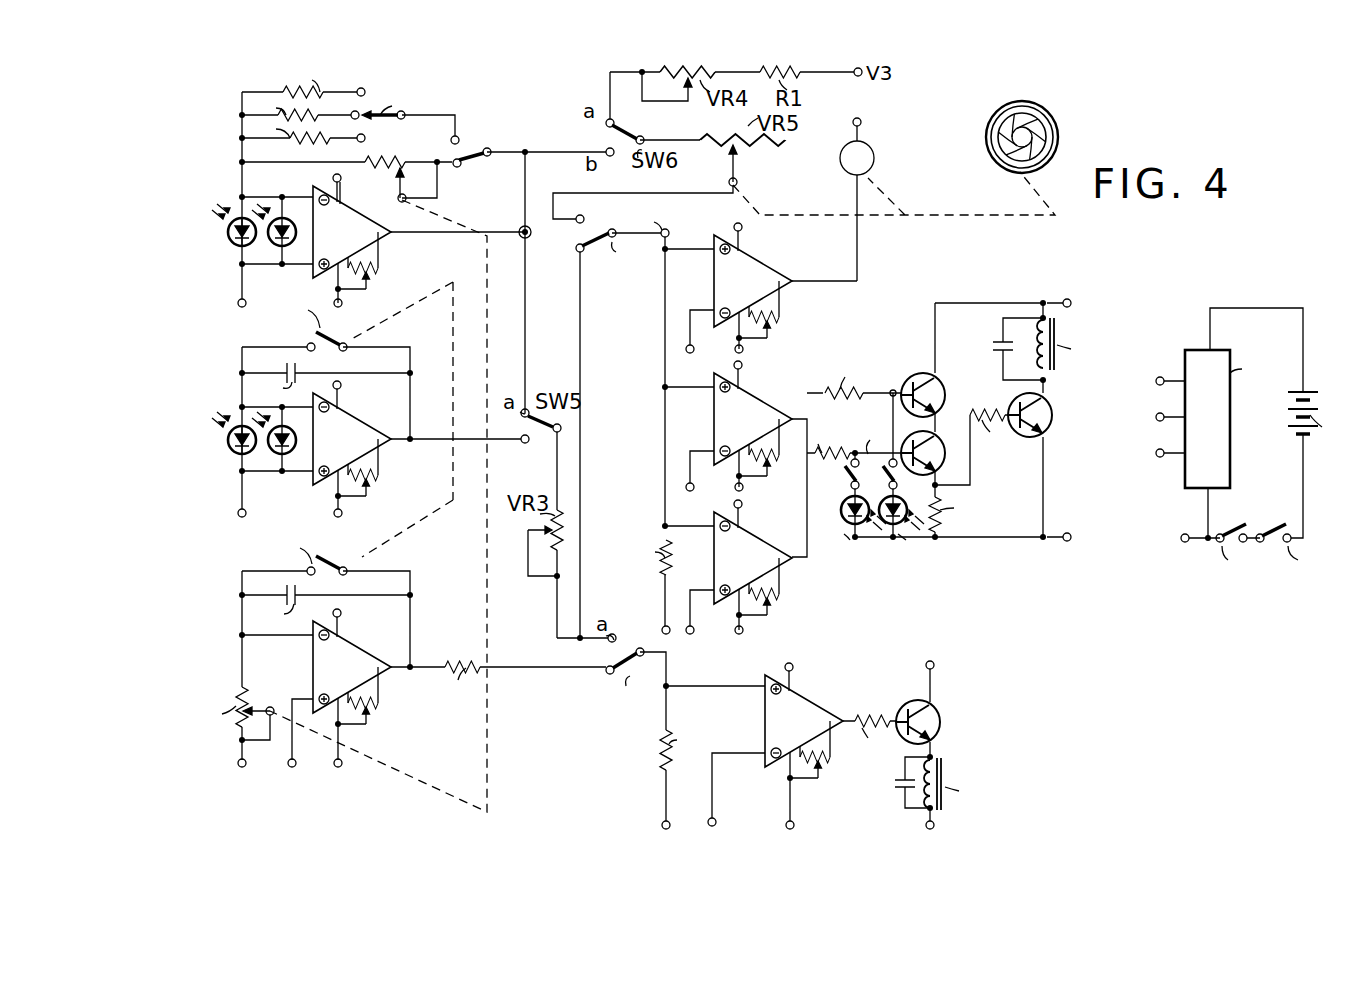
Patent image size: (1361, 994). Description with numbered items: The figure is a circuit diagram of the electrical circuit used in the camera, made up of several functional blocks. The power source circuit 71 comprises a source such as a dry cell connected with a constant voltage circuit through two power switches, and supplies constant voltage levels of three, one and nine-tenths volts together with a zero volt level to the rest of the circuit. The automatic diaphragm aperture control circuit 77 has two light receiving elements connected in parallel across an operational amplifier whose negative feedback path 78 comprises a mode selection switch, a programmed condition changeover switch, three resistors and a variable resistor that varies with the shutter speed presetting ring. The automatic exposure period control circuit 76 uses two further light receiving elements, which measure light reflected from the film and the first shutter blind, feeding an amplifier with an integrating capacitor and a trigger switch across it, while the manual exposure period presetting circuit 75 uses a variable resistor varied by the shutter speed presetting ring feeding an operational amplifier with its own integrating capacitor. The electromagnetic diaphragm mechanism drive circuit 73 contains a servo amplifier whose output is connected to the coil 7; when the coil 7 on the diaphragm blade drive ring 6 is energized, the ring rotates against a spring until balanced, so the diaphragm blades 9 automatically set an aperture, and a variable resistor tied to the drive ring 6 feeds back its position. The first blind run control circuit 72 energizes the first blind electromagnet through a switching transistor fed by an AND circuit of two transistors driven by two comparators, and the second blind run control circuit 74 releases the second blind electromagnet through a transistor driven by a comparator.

The automatic diaphragm aperture control circuit 77 is at (220, 170).
The automatic exposure period control circuit 76 is at (220, 383).
The manual exposure period presetting circuit 75 is at (220, 648).
The negative feedback path 78 is at (372, 103).
The electromagnetic diaphragm mechanism drive circuit 73 is at (705, 231).
The first blind run control circuit 72 is at (912, 368).
The second blind run control circuit 74 is at (749, 721).
The power source circuit 71 is at (1270, 342).
The coil 7 is at (875, 156).
The diaphragm blades 9 is at (1024, 105).
The diaphragm blade drive ring 6 is at (1057, 135).